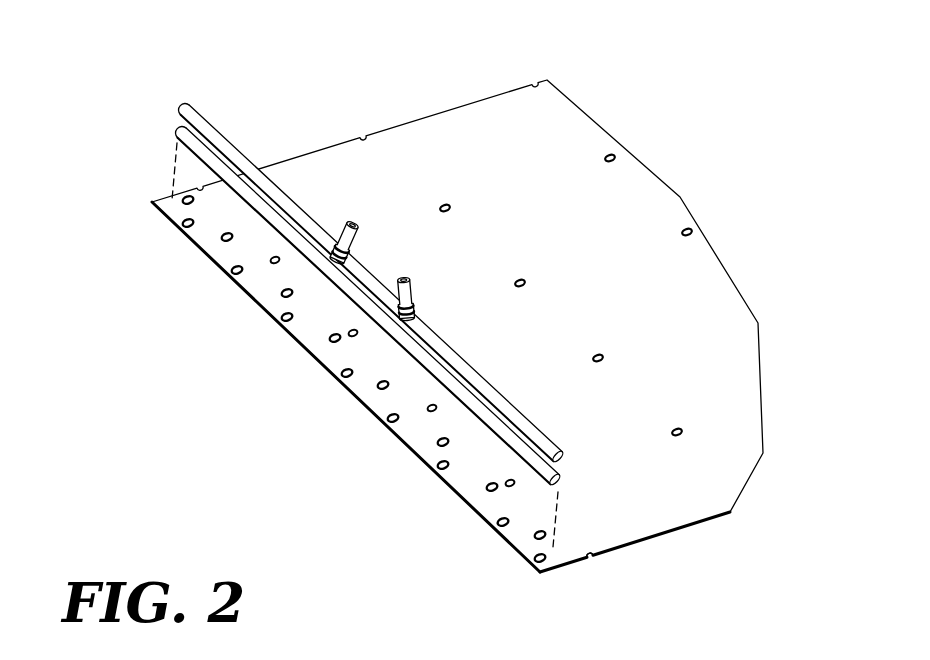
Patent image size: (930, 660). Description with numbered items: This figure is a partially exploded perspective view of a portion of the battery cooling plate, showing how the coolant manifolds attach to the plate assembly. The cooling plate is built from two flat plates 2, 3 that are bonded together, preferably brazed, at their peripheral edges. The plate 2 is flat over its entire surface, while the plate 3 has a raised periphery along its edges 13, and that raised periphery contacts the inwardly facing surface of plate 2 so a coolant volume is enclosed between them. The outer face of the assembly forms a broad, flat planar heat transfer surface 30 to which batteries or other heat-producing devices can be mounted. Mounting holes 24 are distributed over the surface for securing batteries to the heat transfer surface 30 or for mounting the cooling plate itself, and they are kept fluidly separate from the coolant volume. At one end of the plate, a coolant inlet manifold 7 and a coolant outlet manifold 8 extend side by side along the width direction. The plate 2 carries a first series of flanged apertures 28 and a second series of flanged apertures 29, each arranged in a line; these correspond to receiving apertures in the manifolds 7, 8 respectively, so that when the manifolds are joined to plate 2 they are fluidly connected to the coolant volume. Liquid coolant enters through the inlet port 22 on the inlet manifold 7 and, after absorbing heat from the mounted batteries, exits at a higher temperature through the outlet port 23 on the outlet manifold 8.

The flat plate 2 is at (437, 110).
The flat plate 3 is at (608, 553).
The coolant inlet manifold 7 is at (238, 183).
The coolant outlet manifold 8 is at (222, 135).
The edges 13 is at (662, 537).
The inlet port 22 is at (353, 215).
The outlet port 23 is at (407, 280).
The mounting holes 24 is at (518, 280).
The first series of flanged apertures 28 is at (277, 318).
The second series of flanged apertures 29 is at (380, 385).
The heat transfer surface 30 is at (703, 333).